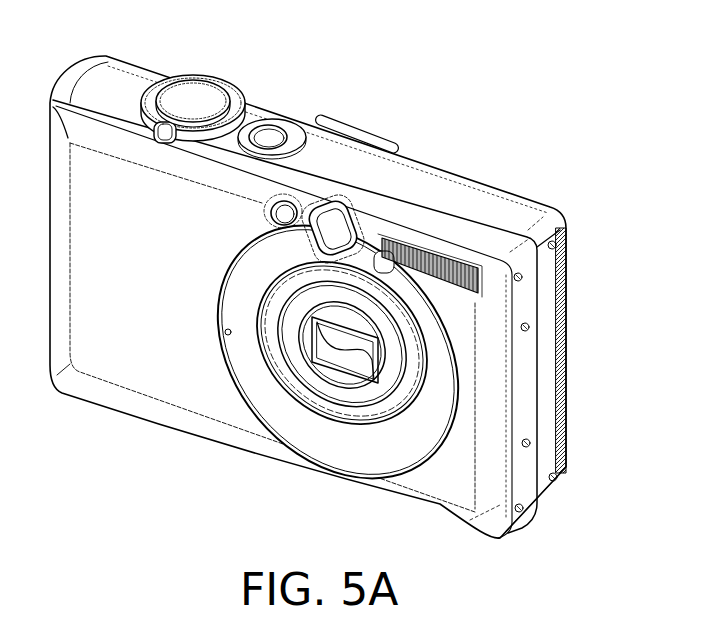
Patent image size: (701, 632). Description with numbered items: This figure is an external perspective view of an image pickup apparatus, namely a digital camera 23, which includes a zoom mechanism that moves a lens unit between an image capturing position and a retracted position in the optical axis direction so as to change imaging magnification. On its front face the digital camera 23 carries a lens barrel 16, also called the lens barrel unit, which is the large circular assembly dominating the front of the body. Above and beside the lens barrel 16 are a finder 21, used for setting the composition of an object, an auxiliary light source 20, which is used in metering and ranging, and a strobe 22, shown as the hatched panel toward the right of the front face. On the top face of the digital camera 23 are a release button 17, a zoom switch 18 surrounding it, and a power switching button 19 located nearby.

The lens barrel 16 is at (335, 398).
The release button 17 is at (197, 90).
The zoom switch 18 is at (232, 97).
The power switching button 19 is at (263, 137).
The auxiliary light source 20 is at (283, 212).
The finder 21 is at (333, 228).
The strobe 22 is at (427, 250).
The digital camera 23 is at (163, 390).